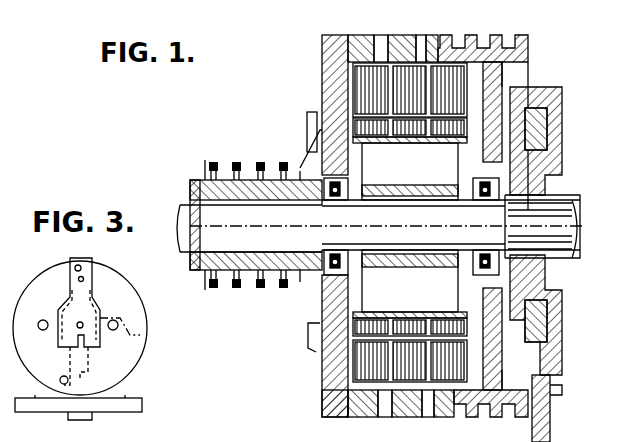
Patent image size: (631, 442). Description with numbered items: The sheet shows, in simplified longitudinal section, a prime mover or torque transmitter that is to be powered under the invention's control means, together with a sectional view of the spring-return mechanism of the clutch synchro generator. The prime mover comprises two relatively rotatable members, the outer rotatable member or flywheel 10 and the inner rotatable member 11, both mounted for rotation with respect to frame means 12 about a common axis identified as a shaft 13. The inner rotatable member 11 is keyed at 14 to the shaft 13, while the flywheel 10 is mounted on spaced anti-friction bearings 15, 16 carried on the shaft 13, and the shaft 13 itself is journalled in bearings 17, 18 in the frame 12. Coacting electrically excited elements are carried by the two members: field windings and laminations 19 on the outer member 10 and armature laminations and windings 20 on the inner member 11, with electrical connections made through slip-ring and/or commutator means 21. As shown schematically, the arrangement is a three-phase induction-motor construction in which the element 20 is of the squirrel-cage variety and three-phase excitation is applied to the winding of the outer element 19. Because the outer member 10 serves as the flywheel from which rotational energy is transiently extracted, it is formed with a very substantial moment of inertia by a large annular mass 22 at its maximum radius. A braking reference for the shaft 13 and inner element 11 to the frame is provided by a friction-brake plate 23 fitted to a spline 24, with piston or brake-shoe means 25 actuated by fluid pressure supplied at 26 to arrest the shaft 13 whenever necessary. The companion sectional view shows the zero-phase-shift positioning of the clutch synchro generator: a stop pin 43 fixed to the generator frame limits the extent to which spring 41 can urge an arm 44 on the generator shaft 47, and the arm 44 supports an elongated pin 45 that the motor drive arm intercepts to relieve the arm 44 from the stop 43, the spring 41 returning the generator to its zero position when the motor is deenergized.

In FIG. 1, the outer rotatable member or flywheel 10 is at (532, 52).
In FIG. 1, the inner rotatable member 11 is at (318, 318).
In FIG. 1, the frame means 12 is at (560, 162).
In FIG. 1, the shaft 13 is at (312, 270).
In FIG. 1, the key 14 is at (374, 196).
In FIG. 1, the anti-friction bearing 15 is at (333, 196).
In FIG. 1, the anti-friction bearing 16 is at (483, 196).
In FIG. 1, the bearing 17 is at (243, 196).
In FIG. 1, the bearing 18 is at (580, 200).
In FIG. 1, the field windings and laminations 19 is at (440, 58).
In FIG. 1, the armature laminations and windings 20 is at (403, 140).
In FIG. 1, the slip-ring and/or commutator means 21 is at (228, 156).
In FIG. 1, the annular mass 22 is at (406, 52).
In FIG. 1, the friction-brake plate 23 is at (560, 292).
In FIG. 1, the spline 24 is at (576, 238).
In FIG. 1, the piston or brake-shoe means 25 is at (550, 122).
In FIG. 1, the fluid pressure supply 26 is at (562, 395).
In FIG. 3, the spring 41 is at (102, 340).
In FIG. 3, the stop pin 43 is at (76, 262).
In FIG. 3, the arm 44 is at (90, 258).
In FIG. 3, the elongated pin 45 is at (86, 282).
In FIG. 3, the generator shaft 47 is at (70, 320).